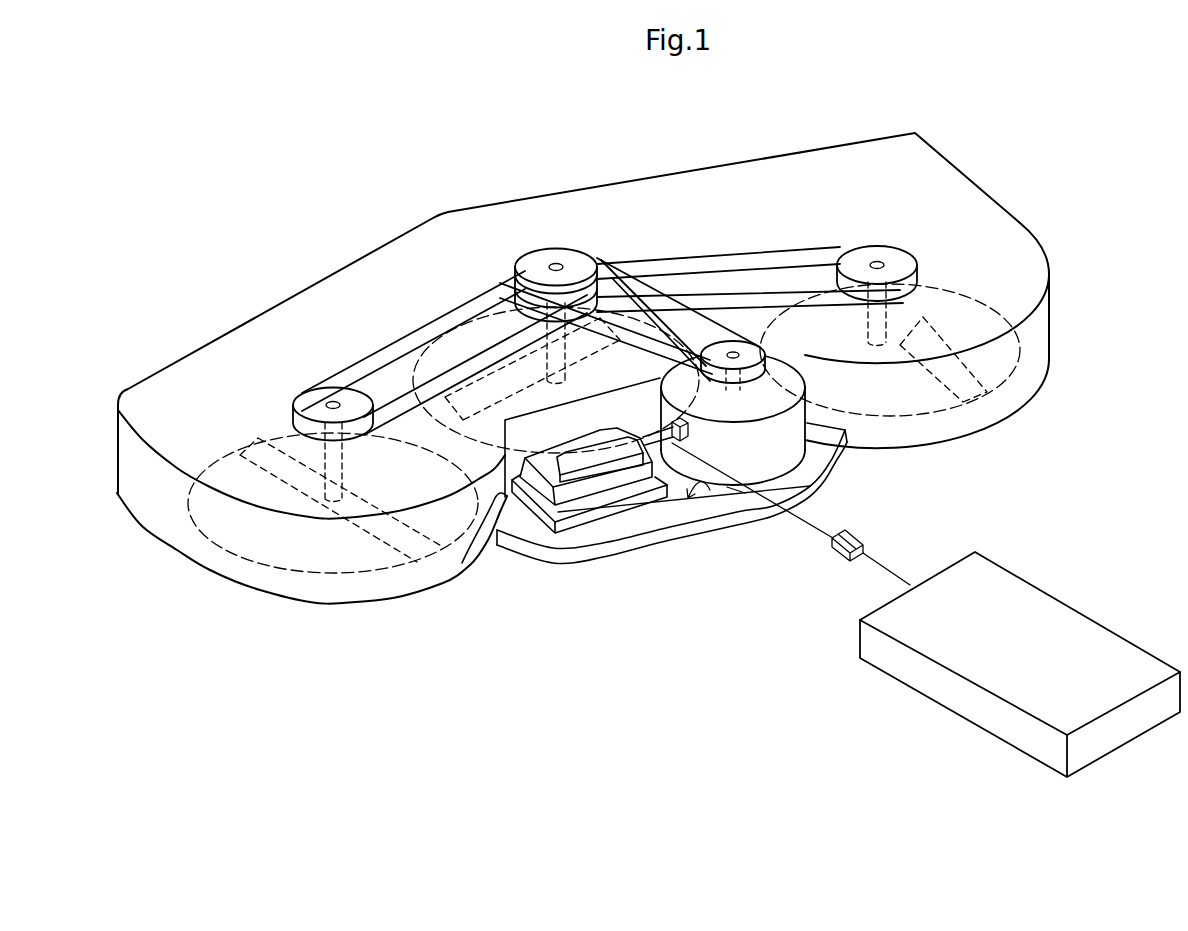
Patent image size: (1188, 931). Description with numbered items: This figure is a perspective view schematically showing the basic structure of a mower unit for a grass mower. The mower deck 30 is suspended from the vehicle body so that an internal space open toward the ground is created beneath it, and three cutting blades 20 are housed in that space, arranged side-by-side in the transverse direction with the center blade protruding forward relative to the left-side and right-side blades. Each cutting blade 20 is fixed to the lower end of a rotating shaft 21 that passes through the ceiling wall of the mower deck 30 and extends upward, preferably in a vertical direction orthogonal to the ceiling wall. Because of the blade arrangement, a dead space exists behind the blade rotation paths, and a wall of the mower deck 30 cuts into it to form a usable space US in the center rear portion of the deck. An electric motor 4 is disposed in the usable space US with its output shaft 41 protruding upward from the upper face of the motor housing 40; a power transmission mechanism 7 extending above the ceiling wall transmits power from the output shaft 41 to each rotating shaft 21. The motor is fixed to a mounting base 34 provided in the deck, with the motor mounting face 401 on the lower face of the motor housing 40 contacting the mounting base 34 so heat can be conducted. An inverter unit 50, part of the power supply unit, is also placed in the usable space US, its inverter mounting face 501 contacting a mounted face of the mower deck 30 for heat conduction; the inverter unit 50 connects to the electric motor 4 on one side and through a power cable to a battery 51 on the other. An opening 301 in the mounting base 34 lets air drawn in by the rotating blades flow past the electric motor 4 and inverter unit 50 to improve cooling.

The mower deck 30 is at (591, 162).
The cutting blade 20 is at (337, 507).
The rotating shaft 21 is at (333, 400).
The power transmission mechanism 7 is at (685, 255).
The electric motor 4 is at (718, 445).
The output shaft 41 is at (732, 350).
The motor housing 40 is at (773, 455).
The mounting base 34 is at (712, 488).
The motor mounting face 401 is at (727, 487).
The inverter unit 50 is at (600, 533).
The inverter mounting face 501 is at (617, 487).
The battery 51 is at (943, 688).
The opening 301 is at (502, 493).
The usable space US is at (526, 524).